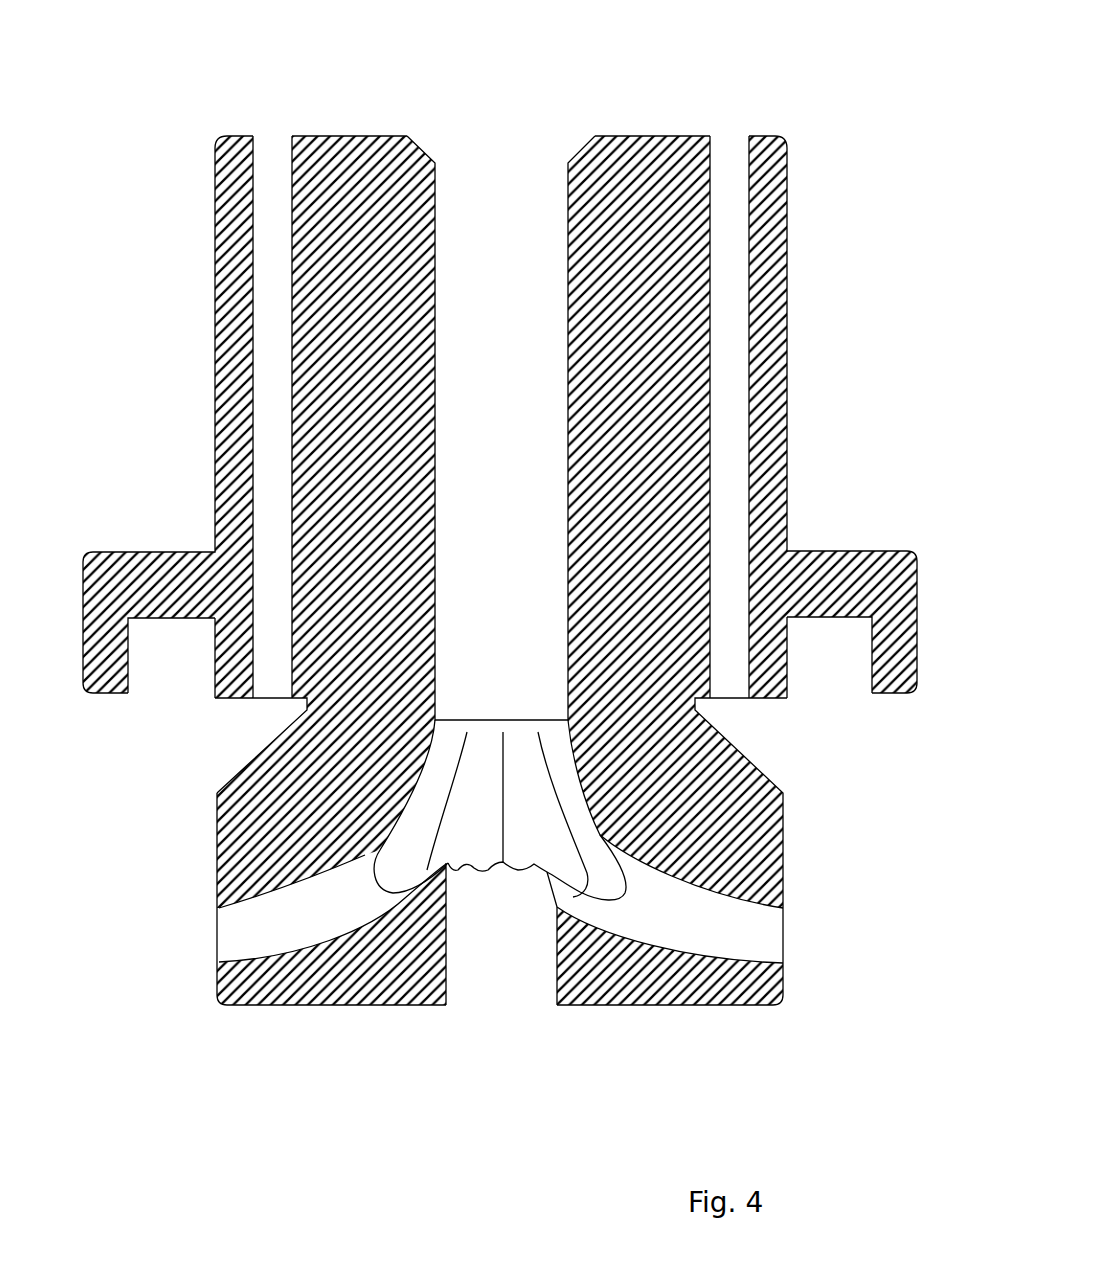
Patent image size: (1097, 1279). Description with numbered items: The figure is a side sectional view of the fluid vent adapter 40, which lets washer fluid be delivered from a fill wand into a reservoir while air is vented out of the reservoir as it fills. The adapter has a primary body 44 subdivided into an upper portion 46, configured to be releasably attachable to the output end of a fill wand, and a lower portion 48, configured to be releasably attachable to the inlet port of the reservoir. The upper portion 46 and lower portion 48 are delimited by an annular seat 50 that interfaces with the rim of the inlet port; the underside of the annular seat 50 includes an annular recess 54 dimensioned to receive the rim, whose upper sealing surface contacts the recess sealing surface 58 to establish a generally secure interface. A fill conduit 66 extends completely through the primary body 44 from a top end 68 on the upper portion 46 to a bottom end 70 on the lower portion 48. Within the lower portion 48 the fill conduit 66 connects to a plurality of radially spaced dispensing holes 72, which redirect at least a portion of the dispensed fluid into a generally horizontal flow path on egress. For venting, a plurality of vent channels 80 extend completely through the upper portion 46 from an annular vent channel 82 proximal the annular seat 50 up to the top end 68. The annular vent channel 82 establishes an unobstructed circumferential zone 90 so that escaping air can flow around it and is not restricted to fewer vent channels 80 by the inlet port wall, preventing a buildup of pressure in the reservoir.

The fluid vent adapter 40 is at (683, 93).
The primary body 44 is at (795, 448).
The upper portion 46 is at (778, 285).
The lower portion 48 is at (750, 830).
The annular seat 50 is at (850, 572).
The annular recess 54 is at (175, 655).
The recess sealing surface 58 is at (820, 640).
The fill conduit 66 is at (521, 408).
The top end 68 is at (607, 134).
The bottom end 70 is at (420, 1000).
The radially spaced dispensing holes 72 is at (770, 940).
The vent channels 80 is at (733, 206).
The annular vent channel 82 is at (176, 759).
The unobstructed circumferential zone 90 is at (272, 712).